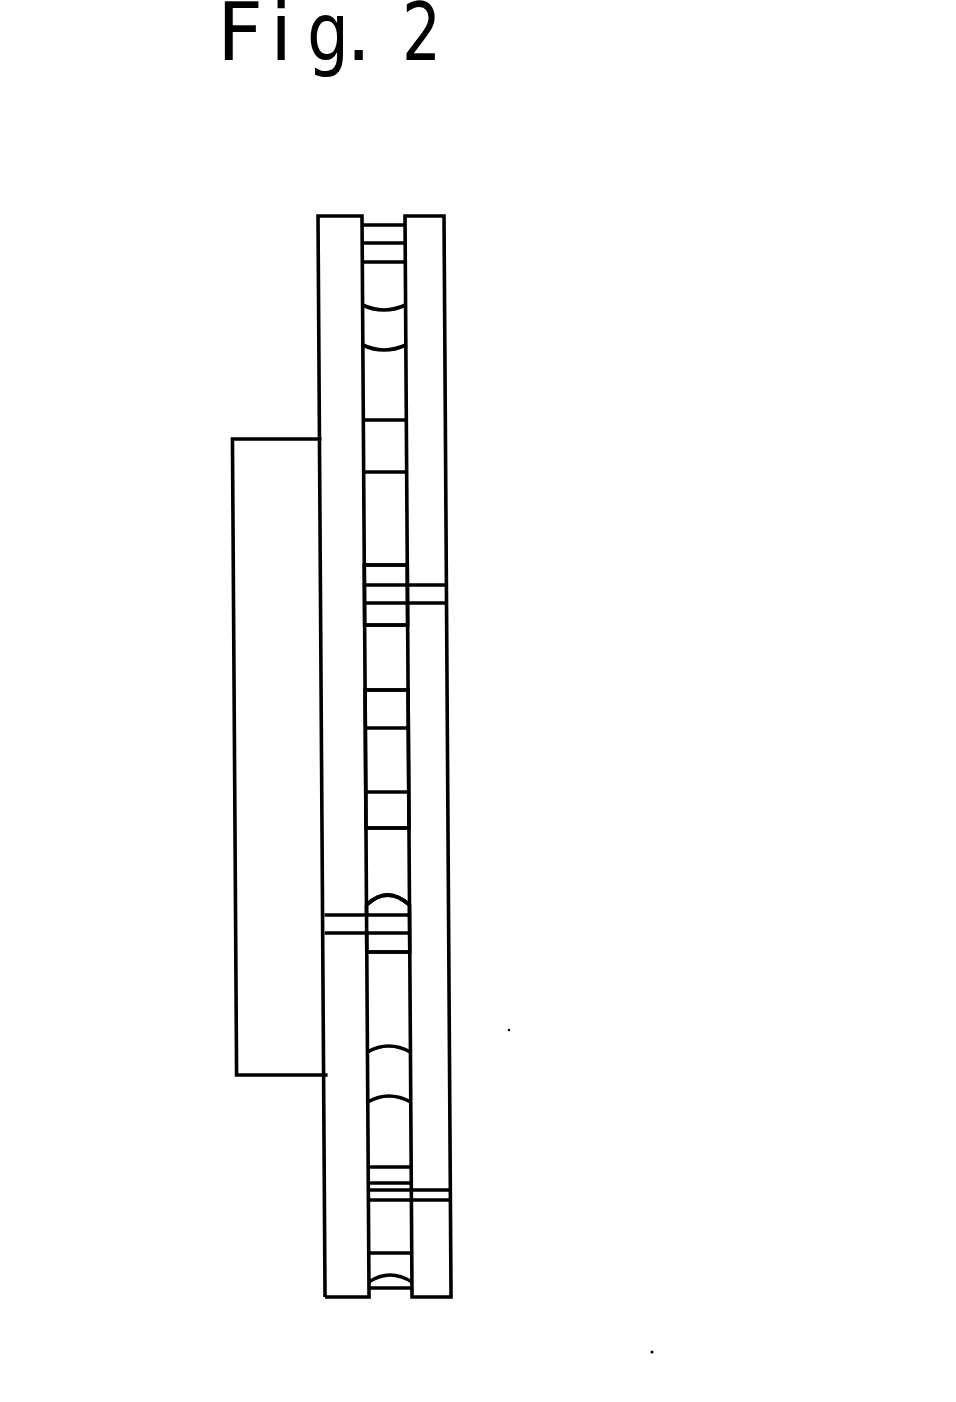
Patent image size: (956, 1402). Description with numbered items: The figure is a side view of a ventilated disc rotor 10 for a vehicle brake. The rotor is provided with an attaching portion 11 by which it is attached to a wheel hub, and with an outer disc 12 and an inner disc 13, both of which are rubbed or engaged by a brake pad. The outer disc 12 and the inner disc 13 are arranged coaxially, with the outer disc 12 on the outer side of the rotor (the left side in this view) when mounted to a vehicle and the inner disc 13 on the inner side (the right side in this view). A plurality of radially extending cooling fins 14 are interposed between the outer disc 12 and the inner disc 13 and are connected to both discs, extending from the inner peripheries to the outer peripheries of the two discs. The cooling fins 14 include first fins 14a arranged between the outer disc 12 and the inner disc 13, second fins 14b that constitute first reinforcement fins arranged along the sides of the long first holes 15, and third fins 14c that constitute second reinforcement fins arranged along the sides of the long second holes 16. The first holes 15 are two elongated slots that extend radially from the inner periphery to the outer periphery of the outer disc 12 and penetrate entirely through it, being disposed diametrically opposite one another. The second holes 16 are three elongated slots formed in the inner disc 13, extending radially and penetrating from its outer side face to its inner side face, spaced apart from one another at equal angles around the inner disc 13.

The disc rotor 10 is at (236, 401).
The attaching portion 11 is at (243, 732).
The outer disc 12 is at (337, 250).
The inner disc 13 is at (428, 247).
The cooling fins 14 is at (542, 756).
The first fins 14a is at (390, 715).
The second fins 14b is at (493, 881).
The third fins 14c is at (383, 575).
The first holes 15 is at (324, 928).
The second holes 16 is at (428, 593).